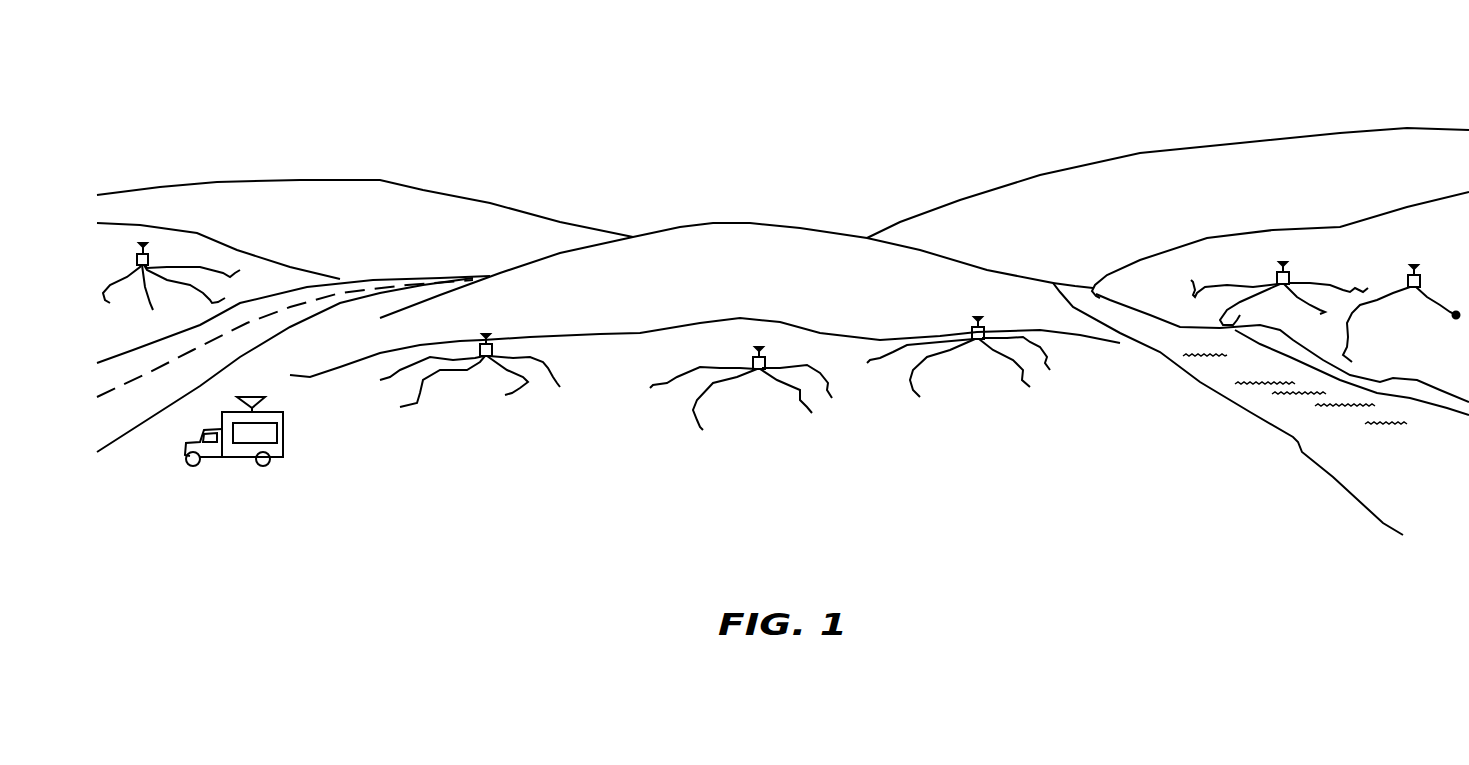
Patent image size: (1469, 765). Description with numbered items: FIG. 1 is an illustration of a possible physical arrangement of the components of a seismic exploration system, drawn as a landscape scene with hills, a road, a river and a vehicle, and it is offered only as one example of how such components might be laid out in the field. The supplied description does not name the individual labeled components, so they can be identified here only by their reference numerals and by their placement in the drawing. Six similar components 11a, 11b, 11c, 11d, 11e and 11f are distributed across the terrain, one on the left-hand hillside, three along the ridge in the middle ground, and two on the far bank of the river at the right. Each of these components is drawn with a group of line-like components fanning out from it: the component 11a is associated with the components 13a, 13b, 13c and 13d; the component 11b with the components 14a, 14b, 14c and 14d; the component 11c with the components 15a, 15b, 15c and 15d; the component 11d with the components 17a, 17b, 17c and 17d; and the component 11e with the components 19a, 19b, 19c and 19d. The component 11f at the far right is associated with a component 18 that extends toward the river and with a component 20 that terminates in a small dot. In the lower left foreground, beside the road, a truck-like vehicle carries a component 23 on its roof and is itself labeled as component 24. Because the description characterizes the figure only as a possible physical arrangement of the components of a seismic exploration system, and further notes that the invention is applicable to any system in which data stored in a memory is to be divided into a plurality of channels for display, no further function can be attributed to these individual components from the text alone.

The remote seismic data acquisition unit 11a is at (147, 254).
The remote seismic data acquisition unit 11b is at (487, 338).
The remote seismic data acquisition unit 11c is at (782, 350).
The remote seismic data acquisition unit 11d is at (983, 328).
The remote seismic data acquisition unit 11e is at (1289, 272).
The remote seismic data acquisition unit 11f is at (1420, 276).
The geophone string 13a is at (123, 293).
The geophone string 13b is at (165, 294).
The geophone string 13c is at (200, 286).
The geophone string 13d is at (210, 274).
The geophone string 14a is at (424, 379).
The geophone string 14b is at (436, 393).
The geophone string 14c is at (507, 387).
The geophone string 14d is at (544, 376).
The geophone string 15a is at (696, 389).
The geophone string 15b is at (725, 405).
The geophone string 15c is at (801, 399).
The geophone string 15d is at (814, 388).
The geophone string 17a is at (914, 360).
The geophone string 17b is at (942, 375).
The geophone string 17c is at (1021, 372).
The geophone string 17d is at (1033, 358).
The geophone string 19a is at (1224, 279).
The geophone string 19b is at (1250, 304).
The geophone string 19c is at (1304, 307).
The geophone string 19d is at (1345, 286).
The hydrophone cable 18 is at (1376, 329).
The hydrophone 20 is at (1456, 316).
The central station antenna 23 is at (283, 433).
The recording truck 24 is at (233, 457).